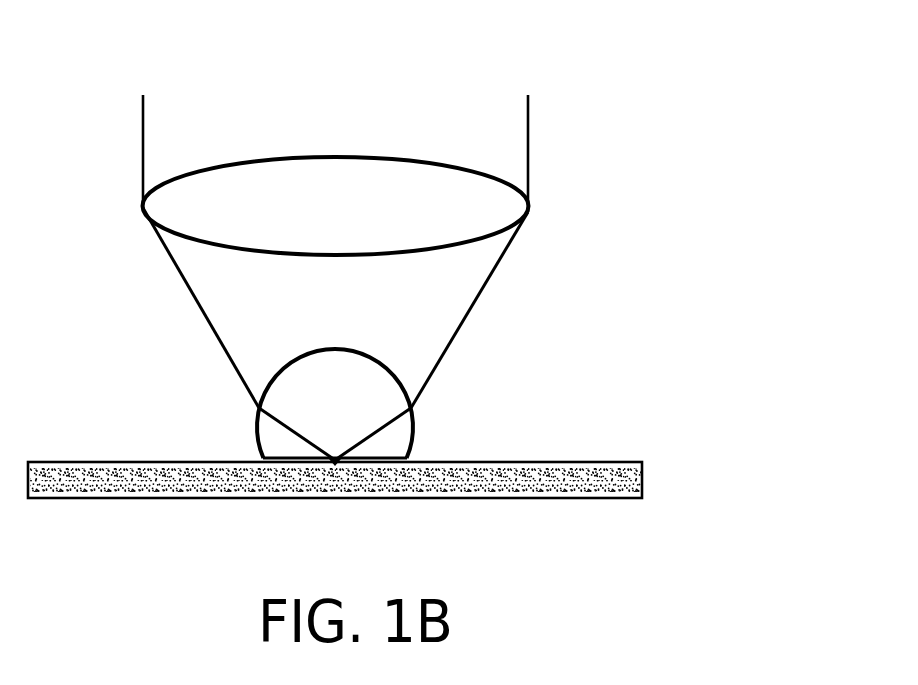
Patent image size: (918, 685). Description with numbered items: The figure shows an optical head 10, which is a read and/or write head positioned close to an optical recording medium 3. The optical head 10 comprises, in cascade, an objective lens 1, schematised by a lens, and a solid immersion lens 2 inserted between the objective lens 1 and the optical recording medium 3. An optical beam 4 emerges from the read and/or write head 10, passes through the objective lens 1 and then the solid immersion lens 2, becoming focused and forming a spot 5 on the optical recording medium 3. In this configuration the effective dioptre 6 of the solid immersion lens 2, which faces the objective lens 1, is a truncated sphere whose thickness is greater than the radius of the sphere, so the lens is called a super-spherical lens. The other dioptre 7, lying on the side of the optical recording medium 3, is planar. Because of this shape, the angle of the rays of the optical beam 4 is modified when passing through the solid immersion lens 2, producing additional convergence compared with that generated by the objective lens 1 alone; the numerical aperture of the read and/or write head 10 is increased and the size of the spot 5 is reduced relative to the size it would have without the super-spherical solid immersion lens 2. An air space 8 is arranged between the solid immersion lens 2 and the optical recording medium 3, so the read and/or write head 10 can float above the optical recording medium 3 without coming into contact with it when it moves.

The objective lens 1 is at (200, 179).
The solid immersion lens 2 is at (266, 432).
The optical recording medium 3 is at (558, 463).
The optical beam 4 is at (528, 127).
The spot 5 is at (350, 457).
The effective dioptre 6 is at (372, 349).
The other dioptre 7 is at (302, 462).
The air space 8 is at (387, 463).
The optical head 10 is at (482, 322).